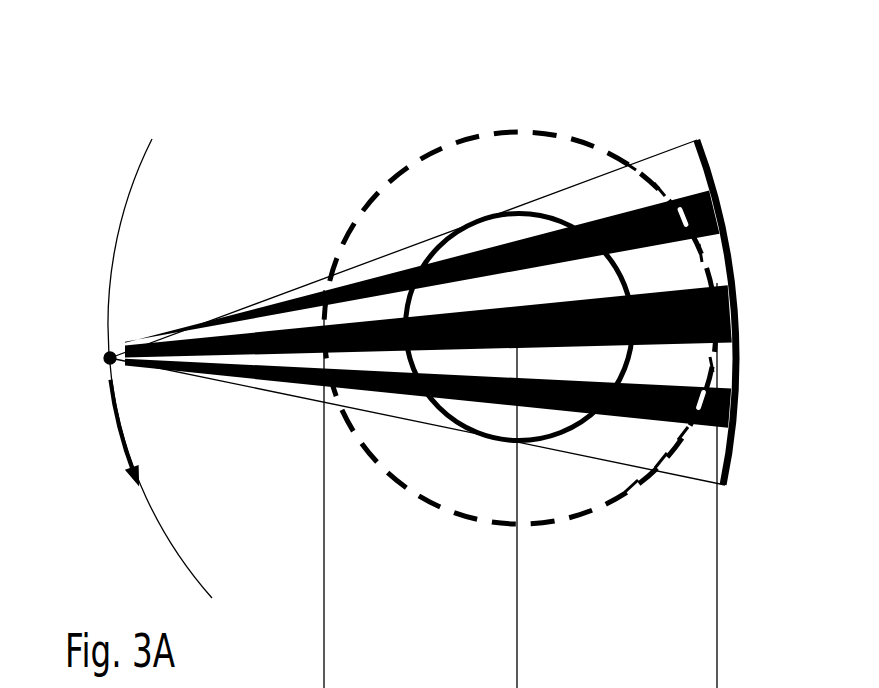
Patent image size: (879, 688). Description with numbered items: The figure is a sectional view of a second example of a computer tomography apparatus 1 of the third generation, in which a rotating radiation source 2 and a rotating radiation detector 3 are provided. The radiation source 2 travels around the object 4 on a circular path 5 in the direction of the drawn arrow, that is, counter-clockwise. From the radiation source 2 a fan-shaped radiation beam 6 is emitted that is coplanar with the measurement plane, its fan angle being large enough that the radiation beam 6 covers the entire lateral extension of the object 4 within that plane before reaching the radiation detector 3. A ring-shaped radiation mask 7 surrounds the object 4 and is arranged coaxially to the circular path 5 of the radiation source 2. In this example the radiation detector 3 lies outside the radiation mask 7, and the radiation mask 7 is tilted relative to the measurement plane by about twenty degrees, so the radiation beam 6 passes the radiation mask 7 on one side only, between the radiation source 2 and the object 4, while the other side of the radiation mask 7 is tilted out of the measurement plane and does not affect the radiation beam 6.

The computer tomography apparatus 1 is at (203, 55).
The radiation source 2 is at (106, 354).
The radiation detector 3 is at (702, 145).
The object 4 is at (435, 248).
The circular path 5 is at (140, 166).
The radiation beam 6 is at (238, 322).
The radiation mask 7 is at (417, 163).